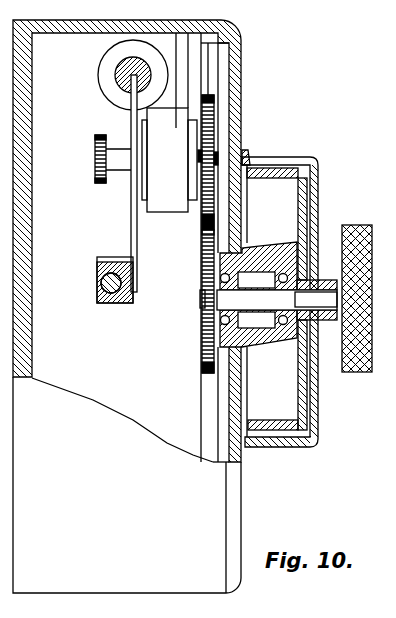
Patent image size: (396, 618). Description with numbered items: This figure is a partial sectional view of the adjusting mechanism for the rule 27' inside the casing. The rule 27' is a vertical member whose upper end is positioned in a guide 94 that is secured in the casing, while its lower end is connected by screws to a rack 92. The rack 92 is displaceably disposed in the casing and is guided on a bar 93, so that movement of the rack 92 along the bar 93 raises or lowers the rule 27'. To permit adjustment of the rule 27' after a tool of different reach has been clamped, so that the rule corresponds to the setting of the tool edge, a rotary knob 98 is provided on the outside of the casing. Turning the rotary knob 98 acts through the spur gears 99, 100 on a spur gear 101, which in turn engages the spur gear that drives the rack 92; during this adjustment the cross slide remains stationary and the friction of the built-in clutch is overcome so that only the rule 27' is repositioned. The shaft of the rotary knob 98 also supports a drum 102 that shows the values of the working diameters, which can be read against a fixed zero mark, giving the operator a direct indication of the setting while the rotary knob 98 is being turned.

The guide 94 is at (117, 73).
The rule 27' is at (155, 183).
The spur gear 101 is at (95, 175).
The rack 92 is at (97, 270).
The bar 93 is at (101, 296).
The spur gear 100 is at (210, 106).
The spur gear 99 is at (204, 366).
The drum 102 is at (311, 170).
The rotary knob 98 is at (354, 225).